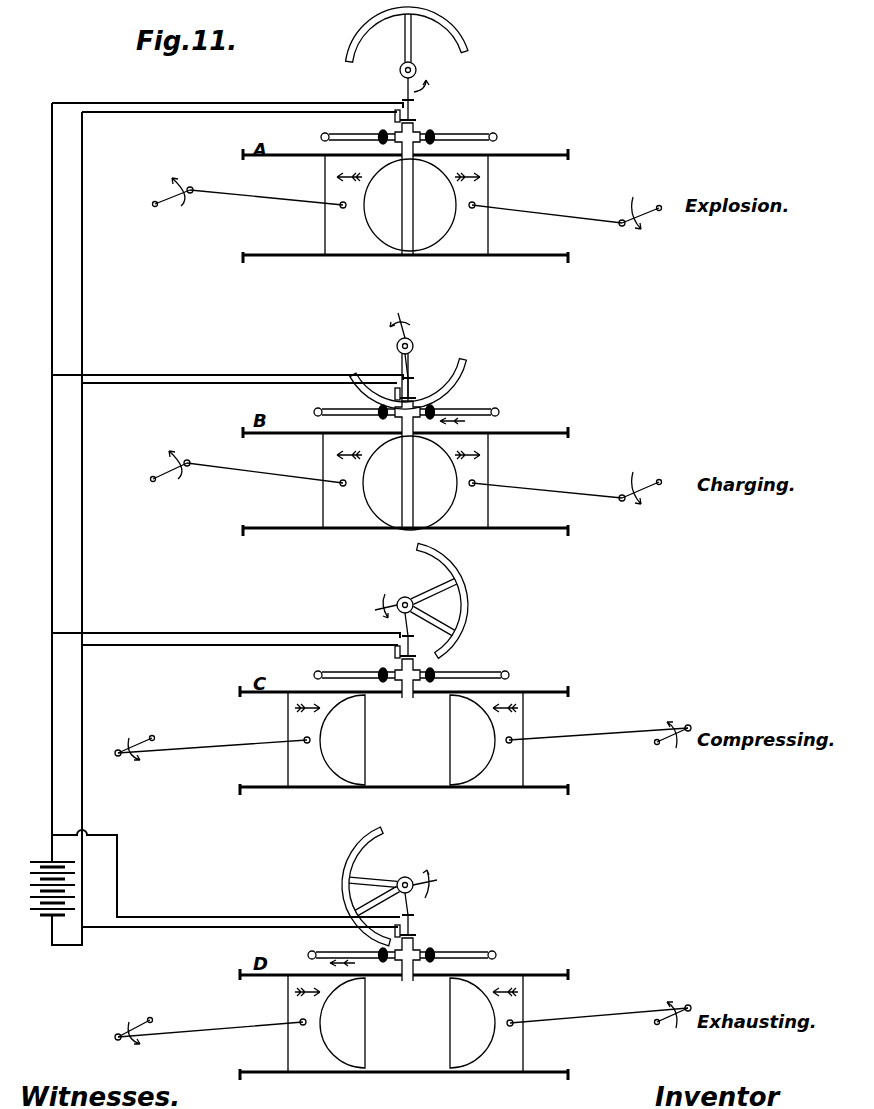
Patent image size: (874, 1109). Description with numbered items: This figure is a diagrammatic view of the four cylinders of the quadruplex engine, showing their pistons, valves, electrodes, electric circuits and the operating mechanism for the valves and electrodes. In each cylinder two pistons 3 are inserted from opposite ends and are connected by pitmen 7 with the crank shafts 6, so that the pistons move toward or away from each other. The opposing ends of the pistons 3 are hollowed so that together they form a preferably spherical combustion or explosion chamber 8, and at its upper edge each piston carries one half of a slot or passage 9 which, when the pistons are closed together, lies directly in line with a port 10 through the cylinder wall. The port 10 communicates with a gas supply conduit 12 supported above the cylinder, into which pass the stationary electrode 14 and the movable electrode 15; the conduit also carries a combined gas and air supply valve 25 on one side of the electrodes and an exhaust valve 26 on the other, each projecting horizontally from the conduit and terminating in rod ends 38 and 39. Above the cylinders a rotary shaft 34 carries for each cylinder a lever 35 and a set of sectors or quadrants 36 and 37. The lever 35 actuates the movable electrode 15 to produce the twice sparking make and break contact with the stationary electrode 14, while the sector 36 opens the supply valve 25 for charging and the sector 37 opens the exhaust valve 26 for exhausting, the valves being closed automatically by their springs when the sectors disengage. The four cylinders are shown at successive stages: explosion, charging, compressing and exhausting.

The pistons 3 is at (405, 628).
The crank shafts 6 is at (403, 611).
The pitmen 7 is at (403, 613).
The combustion or explosion chamber 8 is at (407, 613).
The slot or passage 9 is at (404, 163).
The port 10 is at (396, 988).
The gas supply conduit 12 is at (408, 542).
The stationary electrode 14 is at (395, 120).
The movable electrode 15 is at (414, 108).
The combined gas and air supply valve 25 is at (426, 553).
The exhaust valve 26 is at (378, 553).
The rotary shaft 34 is at (416, 63).
The lever 35 is at (428, 90).
The sector or quadrant 36 is at (417, 476).
The sector or quadrant 37 is at (406, 465).
The right rod end ring 38 is at (508, 546).
The left rod end ring 39 is at (308, 546).